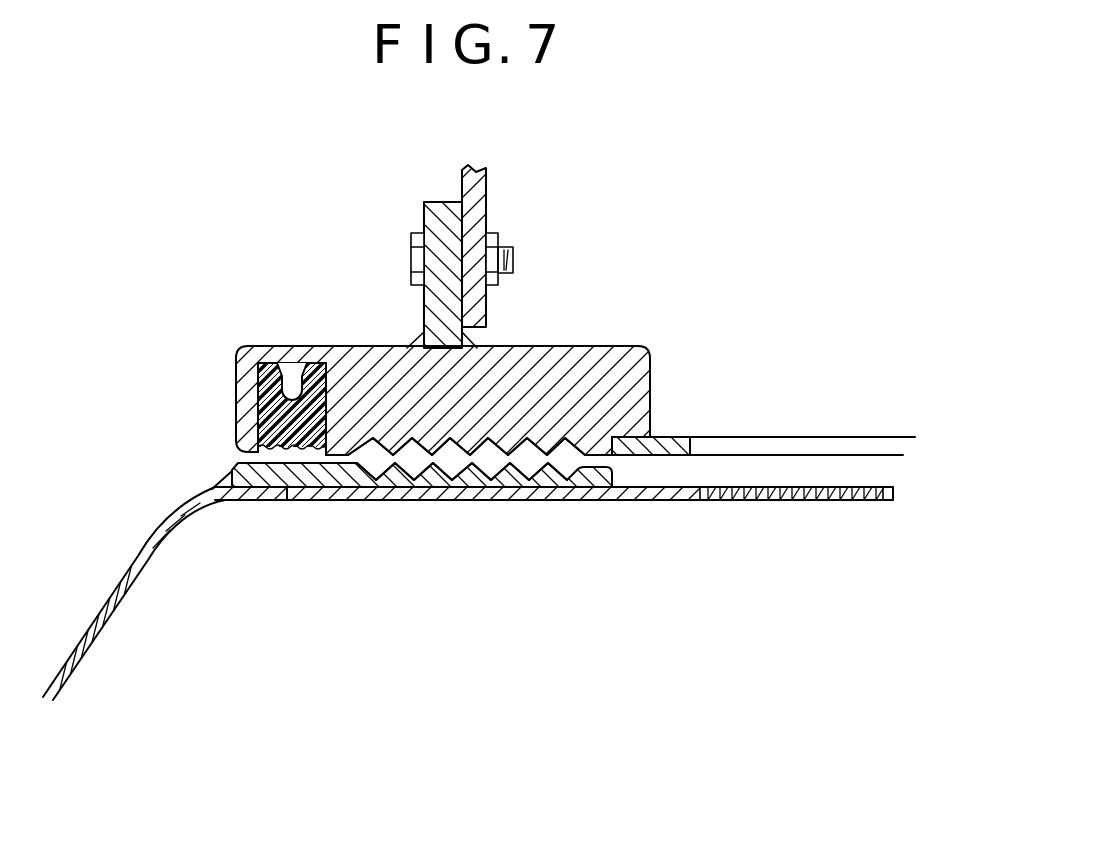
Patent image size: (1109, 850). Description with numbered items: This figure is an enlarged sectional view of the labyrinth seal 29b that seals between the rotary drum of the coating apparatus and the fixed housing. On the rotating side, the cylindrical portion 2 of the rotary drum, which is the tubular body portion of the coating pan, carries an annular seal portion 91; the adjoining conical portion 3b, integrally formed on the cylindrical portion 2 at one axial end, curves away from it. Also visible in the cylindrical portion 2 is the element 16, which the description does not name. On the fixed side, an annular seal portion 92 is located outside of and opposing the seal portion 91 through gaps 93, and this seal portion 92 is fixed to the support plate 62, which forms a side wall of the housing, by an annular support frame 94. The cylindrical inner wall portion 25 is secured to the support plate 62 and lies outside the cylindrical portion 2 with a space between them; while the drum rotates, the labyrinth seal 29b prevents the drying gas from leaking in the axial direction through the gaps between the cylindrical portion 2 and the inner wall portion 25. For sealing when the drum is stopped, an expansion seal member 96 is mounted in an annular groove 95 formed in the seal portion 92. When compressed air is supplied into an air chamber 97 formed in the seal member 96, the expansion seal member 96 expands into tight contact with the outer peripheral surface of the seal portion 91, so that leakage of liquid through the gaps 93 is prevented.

The annular support frame 94 is at (440, 200).
The support plate 62 is at (485, 205).
The labyrinth seal 29b is at (591, 343).
The annular groove 95 is at (292, 370).
The air chamber 97 is at (293, 392).
The expansion seal member 96 is at (275, 426).
The annular seal portion on the fixed side 92 is at (637, 368).
The cylindrical inner wall portion 25 is at (680, 443).
The annular seal portion on the rotating side 91 is at (418, 500).
The gaps 93 is at (527, 463).
The cylindrical portion 2 is at (668, 500).
The reinforcing member 16 is at (818, 502).
The conical portion 3b is at (87, 645).